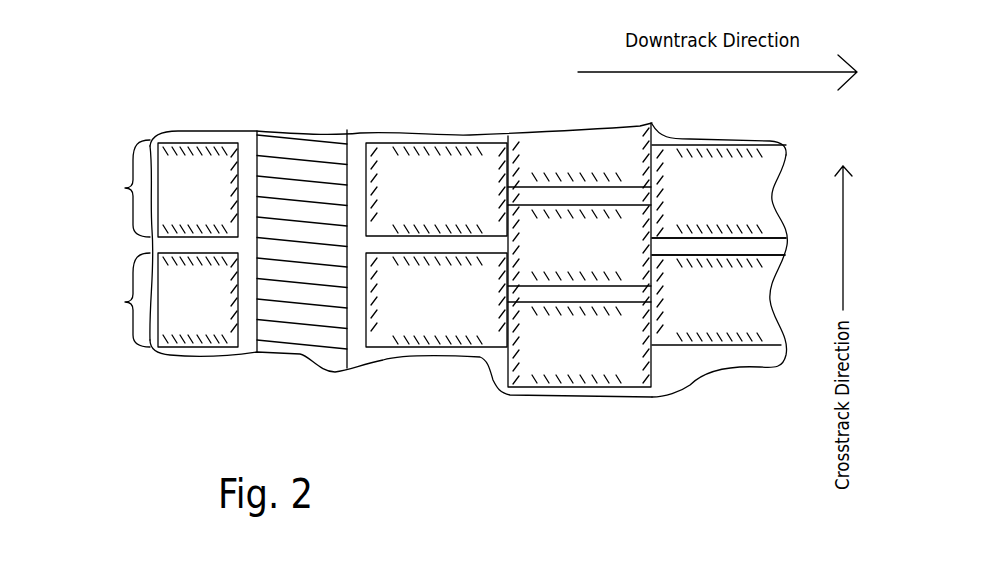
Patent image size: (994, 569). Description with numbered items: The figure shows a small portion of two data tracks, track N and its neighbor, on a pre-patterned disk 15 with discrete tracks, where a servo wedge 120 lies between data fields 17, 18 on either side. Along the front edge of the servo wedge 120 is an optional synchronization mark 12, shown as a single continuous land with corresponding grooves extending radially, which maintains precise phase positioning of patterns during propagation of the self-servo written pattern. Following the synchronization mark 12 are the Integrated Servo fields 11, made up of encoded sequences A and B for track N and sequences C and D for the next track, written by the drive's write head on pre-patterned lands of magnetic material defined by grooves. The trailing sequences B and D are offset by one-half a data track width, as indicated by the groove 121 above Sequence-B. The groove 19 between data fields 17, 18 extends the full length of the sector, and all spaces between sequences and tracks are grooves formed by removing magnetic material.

The pre-patterned disk 15 is at (252, 70).
The servo wedge 120 is at (652, 120).
The synchronization mark 12 is at (303, 354).
The Integrated Servo fields 11 is at (507, 306).
The groove 121 is at (605, 193).
The data field 17 is at (763, 209).
The groove 19 is at (774, 249).
The data field 18 is at (763, 300).